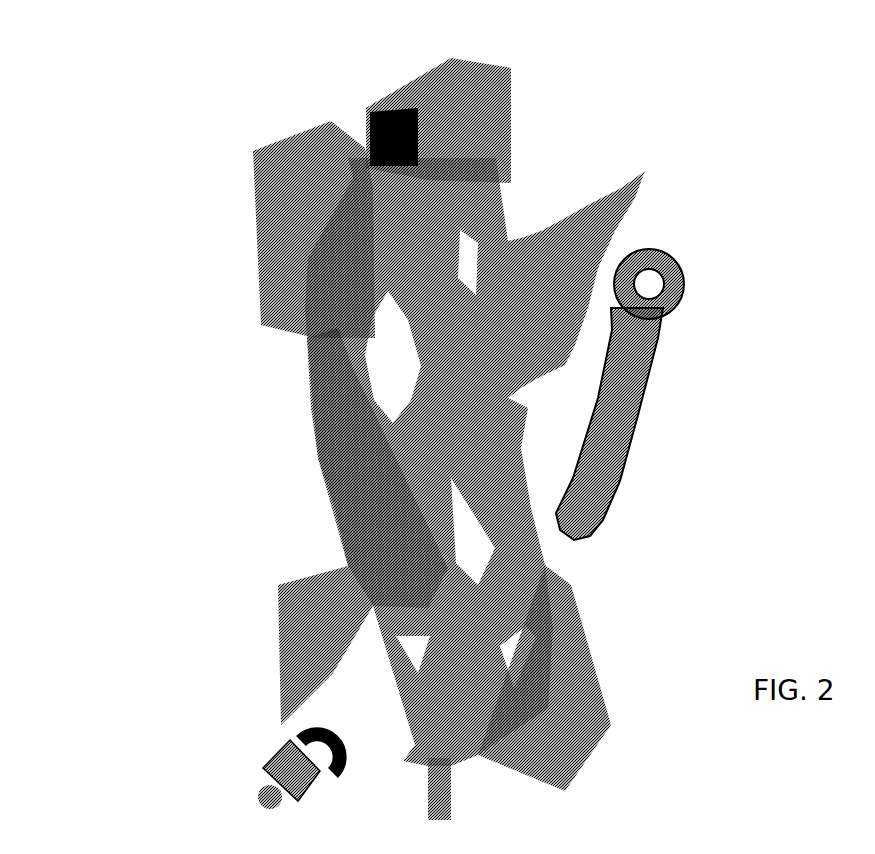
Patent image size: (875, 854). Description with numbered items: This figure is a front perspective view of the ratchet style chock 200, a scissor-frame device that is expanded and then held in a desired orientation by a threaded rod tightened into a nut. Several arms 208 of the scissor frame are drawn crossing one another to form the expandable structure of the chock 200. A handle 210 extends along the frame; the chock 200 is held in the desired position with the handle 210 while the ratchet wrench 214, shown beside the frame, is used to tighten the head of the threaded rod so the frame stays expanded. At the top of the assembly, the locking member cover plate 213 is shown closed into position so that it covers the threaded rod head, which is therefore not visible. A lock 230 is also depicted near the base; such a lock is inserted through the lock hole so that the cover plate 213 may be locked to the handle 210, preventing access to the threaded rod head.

The chock 200 is at (160, 509).
The arm 208 is at (241, 265).
The handle 210 is at (292, 417).
The locking member cover plate 213 is at (478, 92).
The ratchet wrench 214 is at (650, 382).
The lock 230 is at (256, 737).